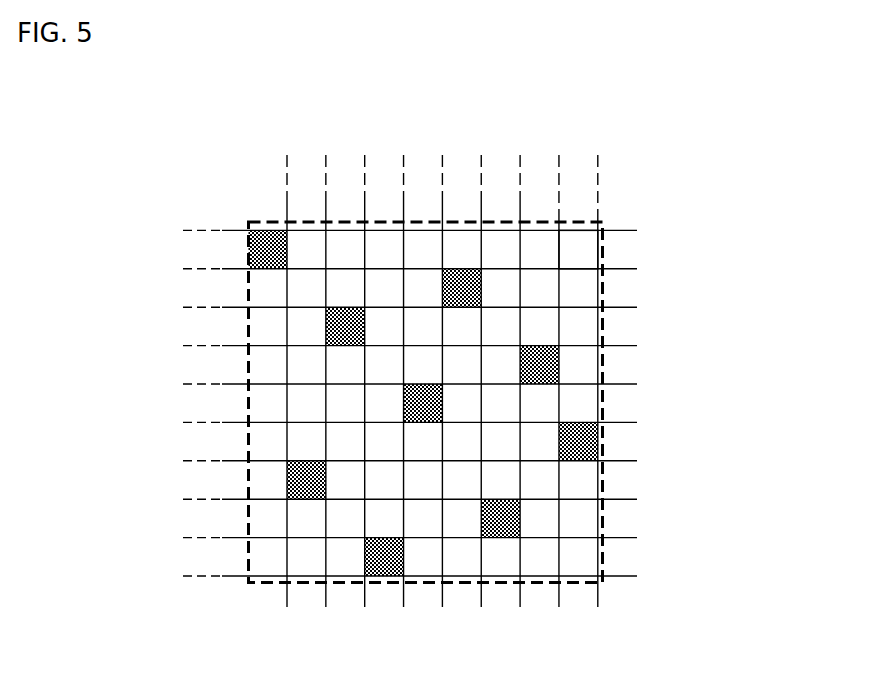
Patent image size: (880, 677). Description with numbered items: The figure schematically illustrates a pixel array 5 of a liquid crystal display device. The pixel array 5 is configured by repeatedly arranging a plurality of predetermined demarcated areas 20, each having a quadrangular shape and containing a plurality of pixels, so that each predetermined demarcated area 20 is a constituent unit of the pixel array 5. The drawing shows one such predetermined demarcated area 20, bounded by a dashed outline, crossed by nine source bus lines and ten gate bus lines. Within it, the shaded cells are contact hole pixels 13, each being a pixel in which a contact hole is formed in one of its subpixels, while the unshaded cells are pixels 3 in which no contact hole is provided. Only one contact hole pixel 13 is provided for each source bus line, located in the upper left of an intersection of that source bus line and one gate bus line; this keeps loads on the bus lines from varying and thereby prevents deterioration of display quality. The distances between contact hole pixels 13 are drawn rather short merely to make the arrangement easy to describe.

The pixel array 5 is at (725, 225).
The predetermined demarcated area 20 is at (248, 402).
The pixel in which no contact hole is provided 3 is at (577, 243).
The contact hole pixel 13 is at (539, 352).